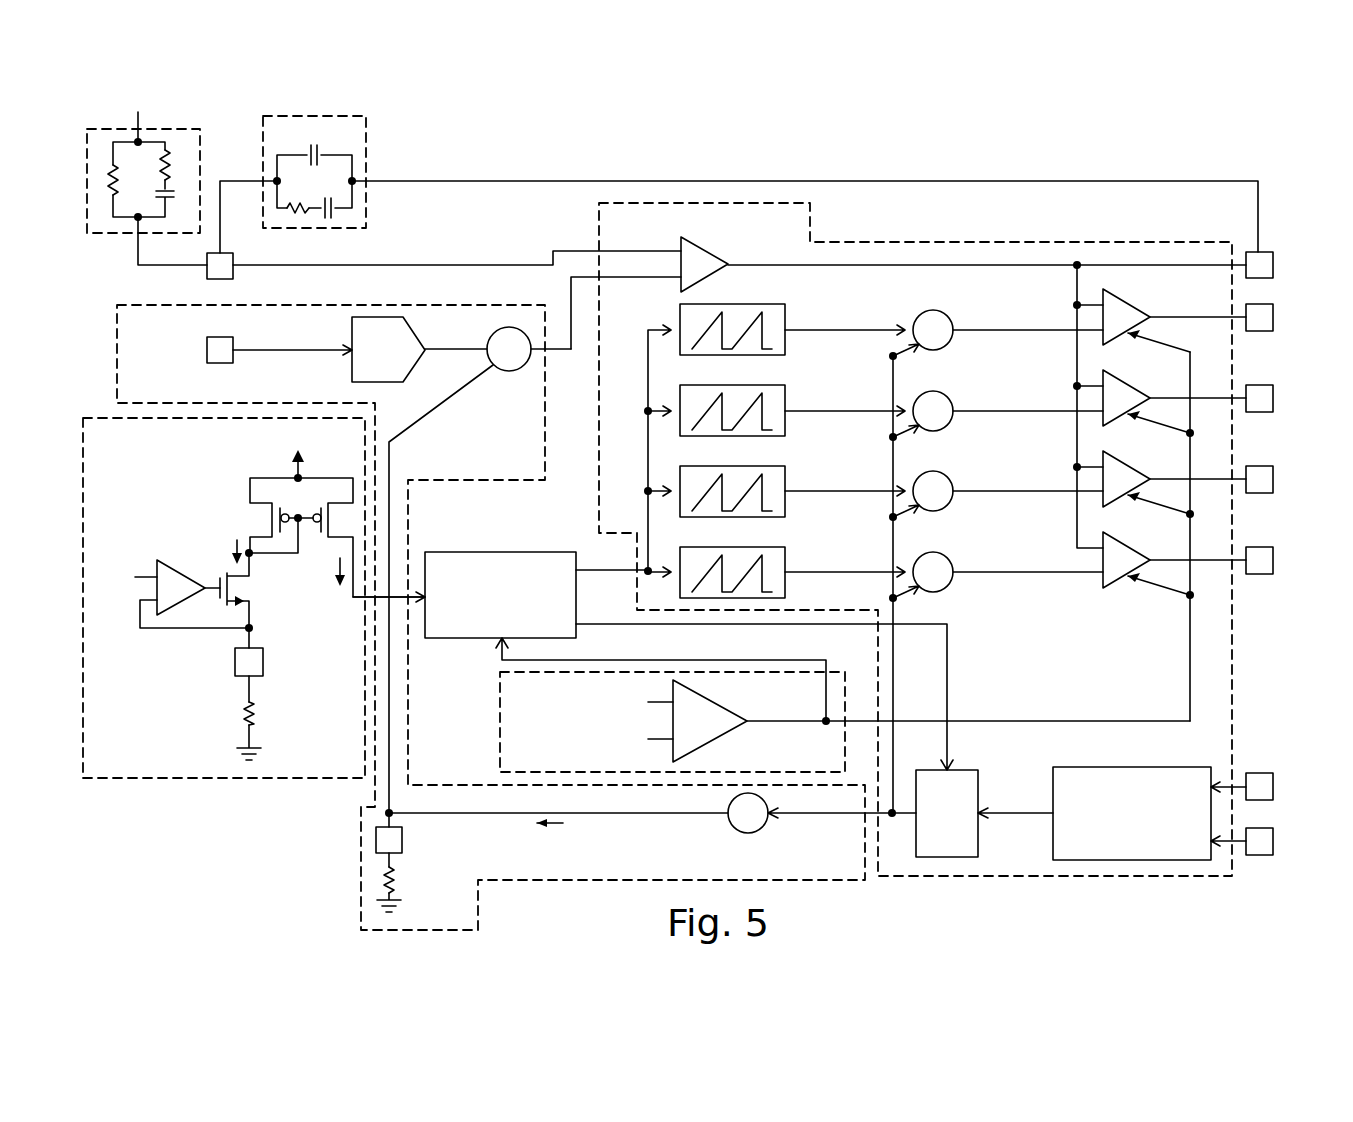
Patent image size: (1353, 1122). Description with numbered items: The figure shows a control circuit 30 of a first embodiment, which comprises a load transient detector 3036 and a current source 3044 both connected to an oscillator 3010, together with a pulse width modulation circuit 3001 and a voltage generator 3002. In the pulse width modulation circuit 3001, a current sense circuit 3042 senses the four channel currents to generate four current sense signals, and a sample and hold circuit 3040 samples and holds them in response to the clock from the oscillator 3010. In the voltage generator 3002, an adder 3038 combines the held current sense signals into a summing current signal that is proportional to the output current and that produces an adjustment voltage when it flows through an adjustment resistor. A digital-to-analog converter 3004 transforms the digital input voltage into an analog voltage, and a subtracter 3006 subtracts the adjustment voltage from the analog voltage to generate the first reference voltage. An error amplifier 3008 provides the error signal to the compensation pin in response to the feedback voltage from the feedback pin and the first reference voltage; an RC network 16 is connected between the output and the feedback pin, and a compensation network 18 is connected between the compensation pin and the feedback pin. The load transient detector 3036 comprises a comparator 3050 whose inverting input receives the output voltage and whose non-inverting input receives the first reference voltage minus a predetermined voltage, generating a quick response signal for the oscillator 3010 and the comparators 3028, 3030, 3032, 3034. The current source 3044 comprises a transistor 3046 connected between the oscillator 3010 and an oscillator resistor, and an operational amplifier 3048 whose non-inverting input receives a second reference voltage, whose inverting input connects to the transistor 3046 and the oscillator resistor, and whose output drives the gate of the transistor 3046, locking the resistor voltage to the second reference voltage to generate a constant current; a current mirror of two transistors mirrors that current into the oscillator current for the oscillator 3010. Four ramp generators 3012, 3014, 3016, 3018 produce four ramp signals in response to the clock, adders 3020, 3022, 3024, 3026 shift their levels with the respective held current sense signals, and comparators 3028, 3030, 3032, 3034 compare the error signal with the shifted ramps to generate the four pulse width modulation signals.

The RC network 16 is at (105, 233).
The compensation network 18 is at (366, 140).
The control circuit 30 is at (1300, 193).
The pulse width modulation circuit 3001 is at (1022, 241).
The voltage generator 3002 is at (361, 888).
The digital-to-analog converter 3004 is at (350, 372).
The subtracter 3006 is at (518, 371).
The error amplifier 3008 is at (712, 244).
The oscillator 3010 is at (497, 552).
The ramp generator 3012 is at (735, 300).
The ramp generator 3014 is at (735, 381).
The ramp generator 3016 is at (735, 462).
The ramp generator 3018 is at (735, 543).
The adder 3020 is at (940, 308).
The adder 3022 is at (940, 389).
The adder 3024 is at (940, 469).
The adder 3026 is at (940, 550).
The comparator 3028 is at (1125, 300).
The comparator 3030 is at (1125, 381).
The comparator 3032 is at (1125, 462).
The comparator 3034 is at (1125, 543).
The load transient detector 3036 is at (812, 717).
The adder 3038 is at (740, 833).
The sample and hold circuit 3040 is at (967, 768).
The current sense circuit 3042 is at (1102, 767).
The current source 3044 is at (168, 778).
The transistor 3046 is at (255, 592).
The operational amplifier 3048 is at (178, 560).
The comparator 3050 is at (713, 740).